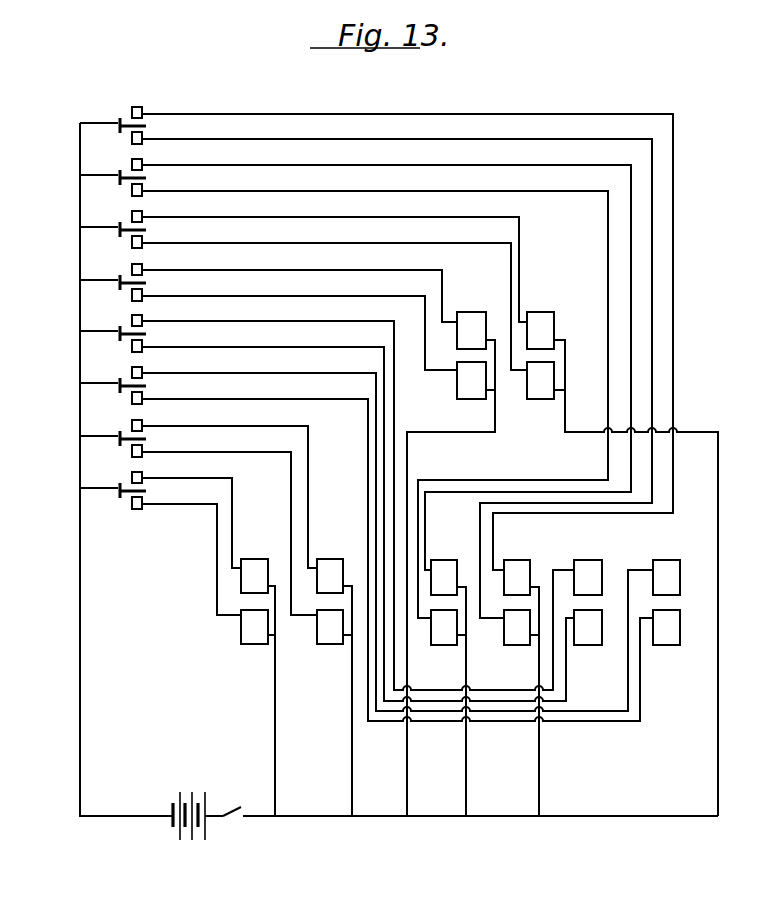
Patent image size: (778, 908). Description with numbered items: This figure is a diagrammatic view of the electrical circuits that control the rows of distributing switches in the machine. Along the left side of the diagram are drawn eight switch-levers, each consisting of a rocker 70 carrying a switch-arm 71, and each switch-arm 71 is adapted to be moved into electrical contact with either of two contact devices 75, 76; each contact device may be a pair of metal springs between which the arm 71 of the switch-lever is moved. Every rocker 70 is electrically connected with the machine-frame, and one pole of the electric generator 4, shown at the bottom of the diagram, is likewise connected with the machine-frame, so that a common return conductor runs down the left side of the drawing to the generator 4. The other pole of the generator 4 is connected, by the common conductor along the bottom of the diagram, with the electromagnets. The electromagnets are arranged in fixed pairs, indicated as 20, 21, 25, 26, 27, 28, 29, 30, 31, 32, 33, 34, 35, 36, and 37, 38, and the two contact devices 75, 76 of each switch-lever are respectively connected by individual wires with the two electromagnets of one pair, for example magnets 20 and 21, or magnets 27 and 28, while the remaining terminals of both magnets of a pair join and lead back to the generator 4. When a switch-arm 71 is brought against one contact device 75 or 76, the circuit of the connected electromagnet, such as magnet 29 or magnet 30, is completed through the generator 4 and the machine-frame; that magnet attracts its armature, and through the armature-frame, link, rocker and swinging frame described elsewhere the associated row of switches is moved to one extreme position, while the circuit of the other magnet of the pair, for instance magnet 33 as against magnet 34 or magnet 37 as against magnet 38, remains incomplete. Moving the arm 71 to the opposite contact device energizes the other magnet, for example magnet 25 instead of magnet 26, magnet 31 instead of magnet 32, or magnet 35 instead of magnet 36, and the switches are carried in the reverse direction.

The electric generator 4 is at (189, 838).
The electromagnet 20 is at (517, 577).
The electromagnet 21 is at (517, 627).
The electromagnet 25 is at (444, 577).
The electromagnet 26 is at (444, 627).
The electromagnet 27 is at (471, 330).
The electromagnet 28 is at (471, 380).
The electromagnet 29 is at (540, 330).
The electromagnet 30 is at (540, 380).
The electromagnet 31 is at (330, 576).
The electromagnet 32 is at (330, 627).
The electromagnet 33 is at (588, 577).
The electromagnet 34 is at (588, 627).
The electromagnet 35 is at (254, 576).
The electromagnet 36 is at (254, 627).
The electromagnet 37 is at (666, 577).
The electromagnet 38 is at (666, 627).
The rocker 70 is at (121, 124).
The switch-arm 71 is at (145, 126).
The contact device 75 is at (137, 105).
The contact device 76 is at (129, 142).